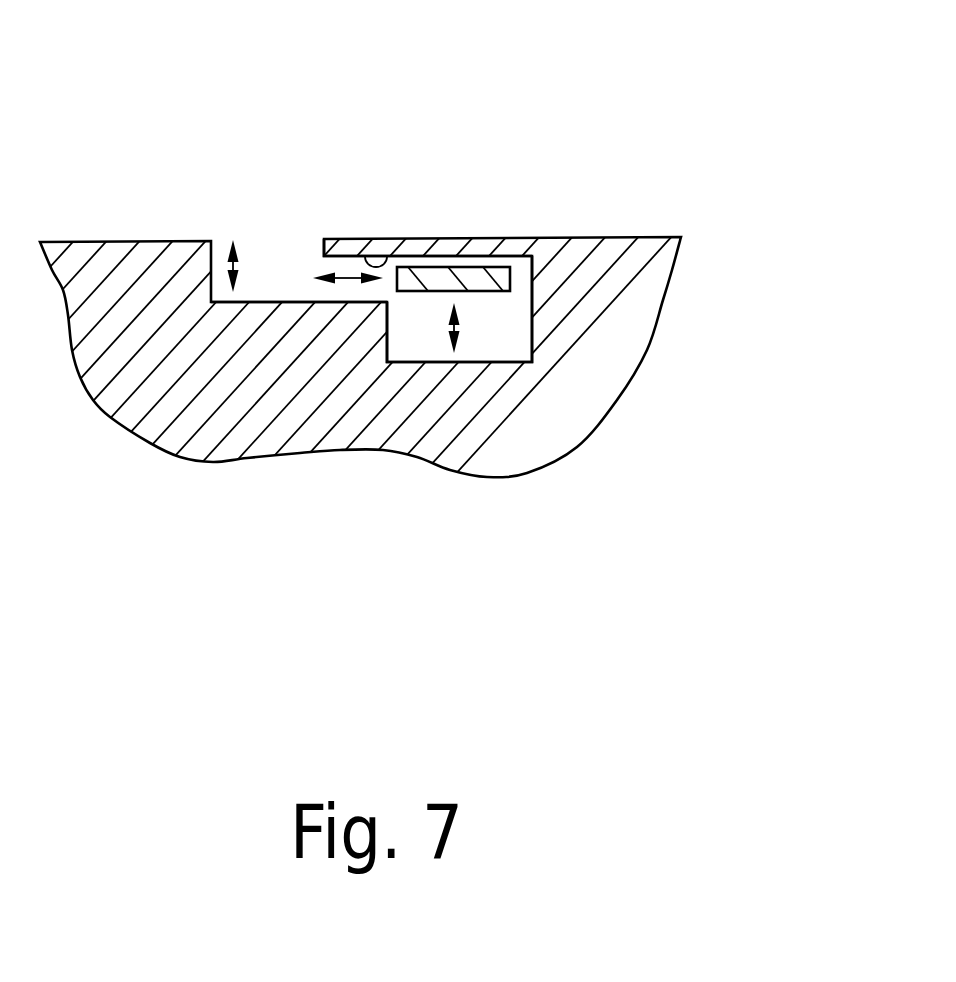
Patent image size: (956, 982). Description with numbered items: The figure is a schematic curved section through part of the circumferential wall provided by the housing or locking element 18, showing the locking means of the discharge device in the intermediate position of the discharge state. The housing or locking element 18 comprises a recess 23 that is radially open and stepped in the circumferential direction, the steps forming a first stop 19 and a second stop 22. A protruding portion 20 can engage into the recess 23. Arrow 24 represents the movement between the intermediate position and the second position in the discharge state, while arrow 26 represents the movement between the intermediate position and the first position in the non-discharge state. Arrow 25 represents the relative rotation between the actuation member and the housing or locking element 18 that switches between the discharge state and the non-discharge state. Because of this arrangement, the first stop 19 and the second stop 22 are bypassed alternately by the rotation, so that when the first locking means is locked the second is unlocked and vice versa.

The housing or locking element 18 is at (580, 262).
The first stop 19 is at (275, 300).
The protruding portion 20 is at (468, 277).
The second stop 22 is at (403, 252).
The recess 23 is at (516, 328).
The arrow 24 is at (458, 330).
The arrow 25 is at (347, 278).
The arrow 26 is at (237, 268).